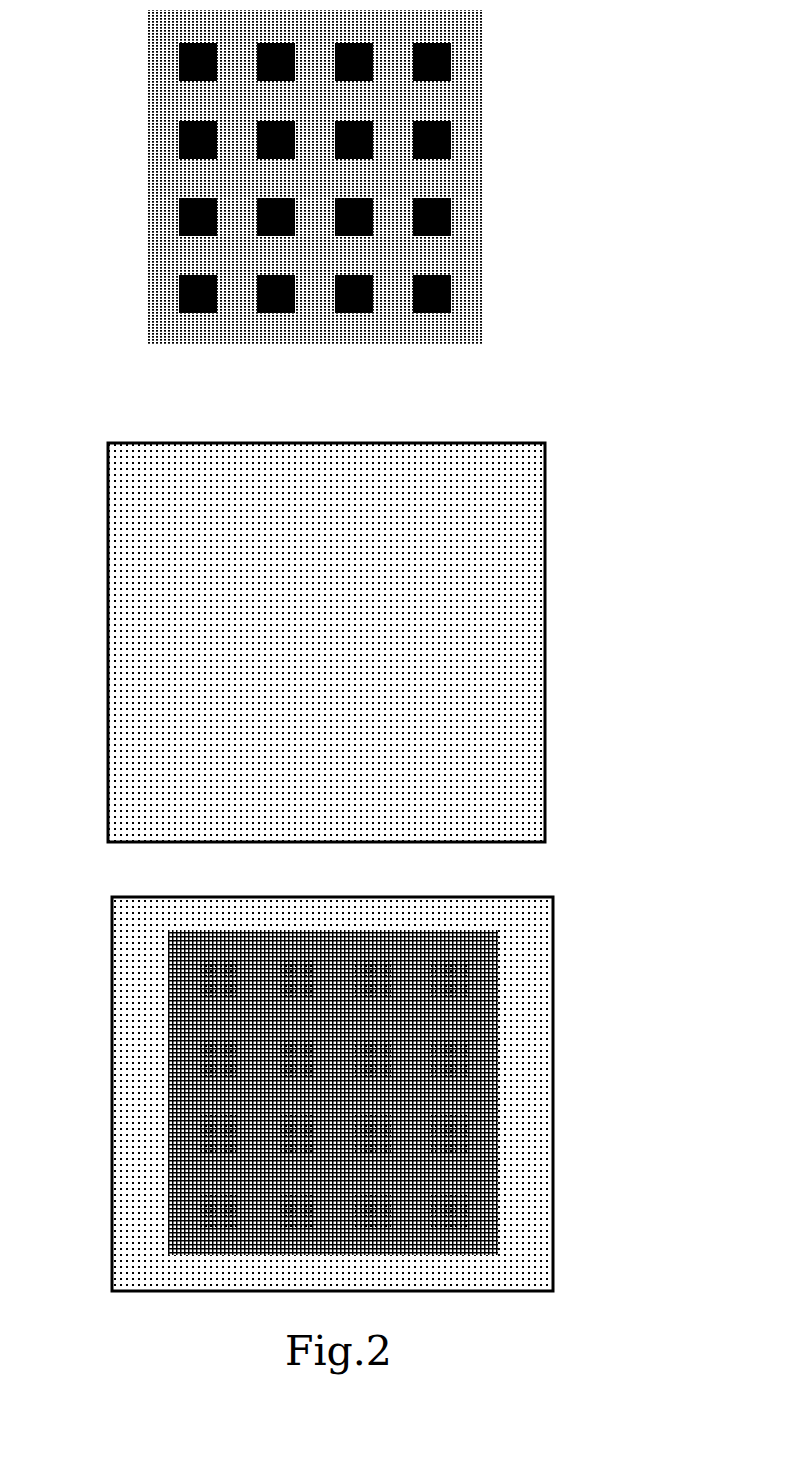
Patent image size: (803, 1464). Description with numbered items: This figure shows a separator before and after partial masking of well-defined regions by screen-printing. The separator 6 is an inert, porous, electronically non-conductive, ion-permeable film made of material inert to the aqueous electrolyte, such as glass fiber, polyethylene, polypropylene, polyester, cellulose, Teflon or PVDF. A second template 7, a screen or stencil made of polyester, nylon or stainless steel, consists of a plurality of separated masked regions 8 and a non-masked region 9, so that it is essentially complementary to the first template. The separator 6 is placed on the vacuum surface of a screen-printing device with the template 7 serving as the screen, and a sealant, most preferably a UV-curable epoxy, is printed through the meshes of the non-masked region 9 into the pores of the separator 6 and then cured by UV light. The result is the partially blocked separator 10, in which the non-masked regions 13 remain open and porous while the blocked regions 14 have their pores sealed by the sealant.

The separator 6 is at (545, 653).
The second template 7 is at (477, 183).
The masked regions 8 is at (178, 204).
The non-masked region 9 is at (312, 254).
The partially blocked separator 10 is at (553, 1097).
The non-masked regions 13 is at (212, 1132).
The blocked regions 14 is at (477, 1163).